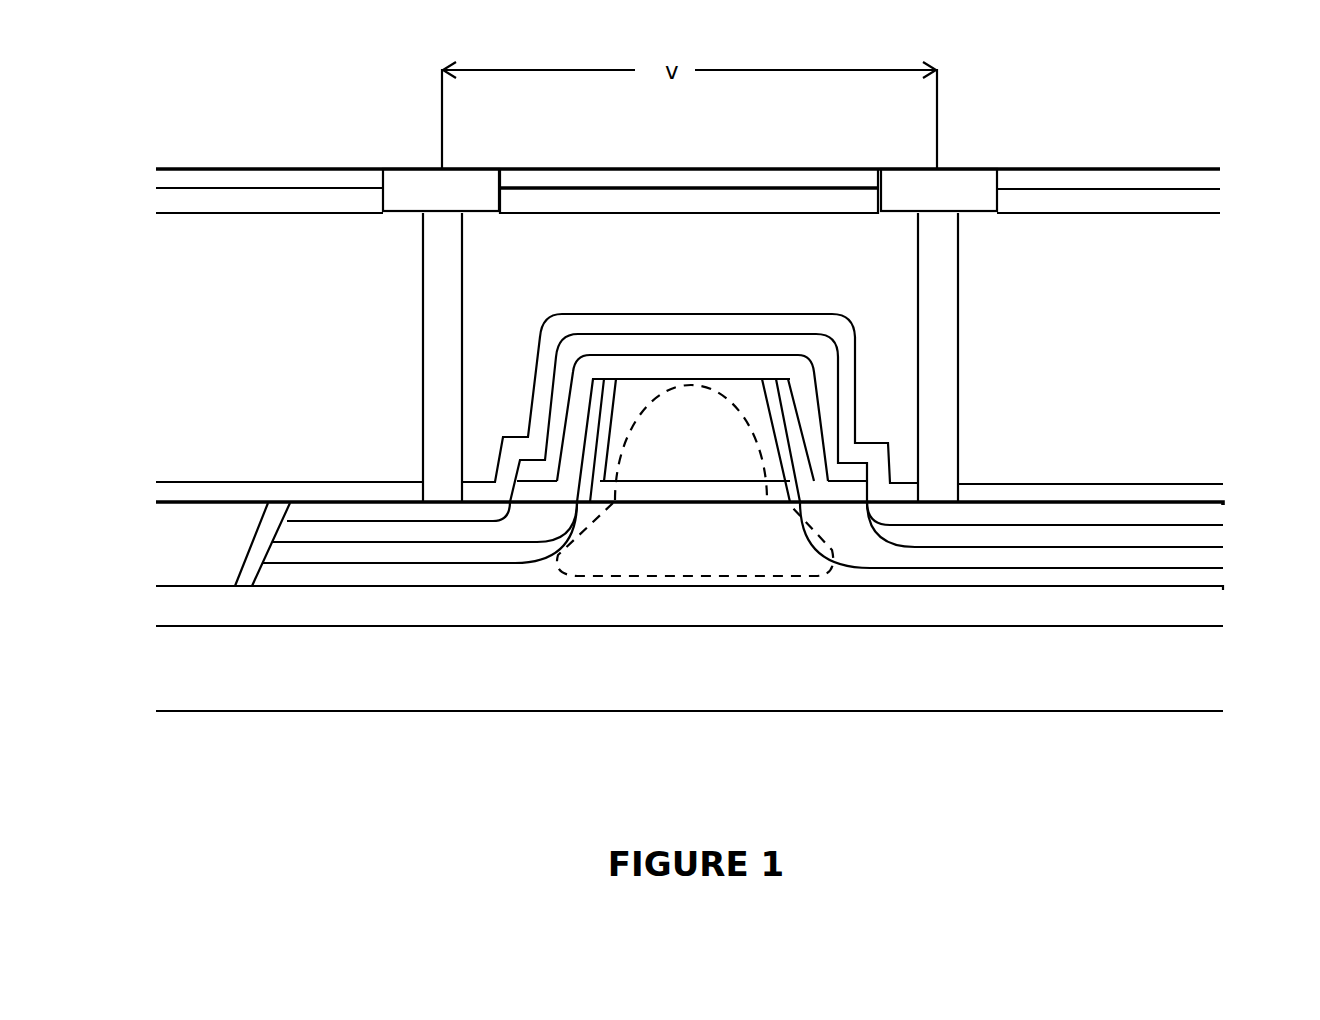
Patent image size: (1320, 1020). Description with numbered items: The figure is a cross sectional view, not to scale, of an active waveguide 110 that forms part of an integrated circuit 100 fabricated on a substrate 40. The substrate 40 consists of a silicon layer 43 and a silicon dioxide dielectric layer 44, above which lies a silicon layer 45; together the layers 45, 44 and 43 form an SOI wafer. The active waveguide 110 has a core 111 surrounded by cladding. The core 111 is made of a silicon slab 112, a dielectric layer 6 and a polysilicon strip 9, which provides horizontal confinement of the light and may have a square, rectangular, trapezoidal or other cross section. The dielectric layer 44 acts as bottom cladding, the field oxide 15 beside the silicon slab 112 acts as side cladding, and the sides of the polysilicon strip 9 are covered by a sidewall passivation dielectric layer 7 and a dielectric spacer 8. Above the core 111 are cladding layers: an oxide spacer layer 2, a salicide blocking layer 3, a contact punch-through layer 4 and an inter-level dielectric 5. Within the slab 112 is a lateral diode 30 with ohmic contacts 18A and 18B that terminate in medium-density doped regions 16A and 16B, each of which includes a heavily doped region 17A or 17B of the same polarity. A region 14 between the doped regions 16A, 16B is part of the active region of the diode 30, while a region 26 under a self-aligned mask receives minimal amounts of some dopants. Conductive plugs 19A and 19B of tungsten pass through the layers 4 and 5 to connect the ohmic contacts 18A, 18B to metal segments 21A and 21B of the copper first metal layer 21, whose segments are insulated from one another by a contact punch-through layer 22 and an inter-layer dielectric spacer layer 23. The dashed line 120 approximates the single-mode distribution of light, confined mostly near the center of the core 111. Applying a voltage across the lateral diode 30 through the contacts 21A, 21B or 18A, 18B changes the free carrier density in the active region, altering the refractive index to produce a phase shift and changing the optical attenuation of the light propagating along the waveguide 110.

The integrated circuit 100 is at (195, 718).
The active waveguide 110 is at (682, 630).
The core 111 is at (690, 305).
The silicon slab 112 is at (668, 556).
The substrate 40 is at (153, 627).
The silicon layer 43 is at (156, 684).
The dielectric layer 44 is at (158, 617).
The silicon layer 45 is at (153, 540).
The field oxide 15 is at (186, 537).
The doped region 16A is at (286, 553).
The doped region 17A is at (378, 533).
The ohmic contact 18A is at (338, 519).
The doped region 16B is at (1230, 565).
The doped region 17B is at (1230, 541).
The ohmic contact 18B is at (1230, 518).
The region 14 is at (615, 568).
The region 26 is at (762, 550).
The dashed line 120 is at (822, 566).
The dielectric layer 6 is at (725, 492).
The dielectric layer 7 is at (615, 413).
The dielectric spacer 8 is at (602, 392).
The polysilicon strip 9 is at (672, 450).
The oxide spacer layer 2 is at (613, 370).
The salicide blocking layer 3 is at (588, 343).
The contact punch-through layer 4 is at (559, 327).
The inter-level dielectric 5 is at (150, 254).
The conductive plug 19A is at (442, 257).
The conductive plug 19B is at (933, 262).
The metal segment 21A is at (441, 190).
The metal segment 21B is at (939, 190).
The first metal layer 21 is at (179, 160).
The contact punch-through layer 22 is at (153, 203).
The inter-layer dielectric spacer layer 23 is at (153, 173).
The lateral diode 30 is at (348, 160).